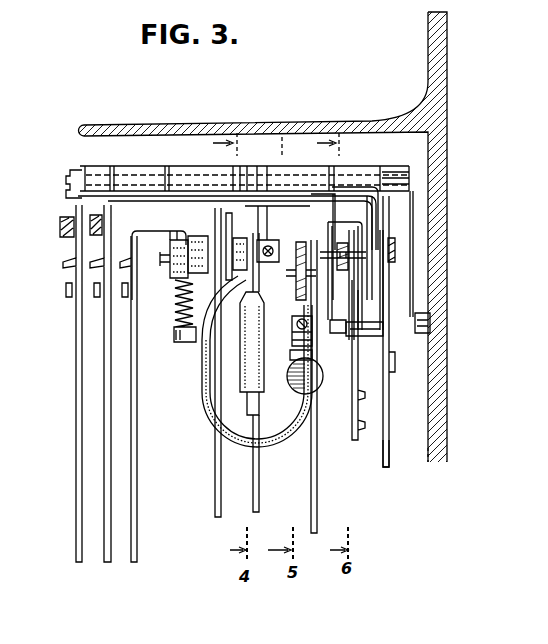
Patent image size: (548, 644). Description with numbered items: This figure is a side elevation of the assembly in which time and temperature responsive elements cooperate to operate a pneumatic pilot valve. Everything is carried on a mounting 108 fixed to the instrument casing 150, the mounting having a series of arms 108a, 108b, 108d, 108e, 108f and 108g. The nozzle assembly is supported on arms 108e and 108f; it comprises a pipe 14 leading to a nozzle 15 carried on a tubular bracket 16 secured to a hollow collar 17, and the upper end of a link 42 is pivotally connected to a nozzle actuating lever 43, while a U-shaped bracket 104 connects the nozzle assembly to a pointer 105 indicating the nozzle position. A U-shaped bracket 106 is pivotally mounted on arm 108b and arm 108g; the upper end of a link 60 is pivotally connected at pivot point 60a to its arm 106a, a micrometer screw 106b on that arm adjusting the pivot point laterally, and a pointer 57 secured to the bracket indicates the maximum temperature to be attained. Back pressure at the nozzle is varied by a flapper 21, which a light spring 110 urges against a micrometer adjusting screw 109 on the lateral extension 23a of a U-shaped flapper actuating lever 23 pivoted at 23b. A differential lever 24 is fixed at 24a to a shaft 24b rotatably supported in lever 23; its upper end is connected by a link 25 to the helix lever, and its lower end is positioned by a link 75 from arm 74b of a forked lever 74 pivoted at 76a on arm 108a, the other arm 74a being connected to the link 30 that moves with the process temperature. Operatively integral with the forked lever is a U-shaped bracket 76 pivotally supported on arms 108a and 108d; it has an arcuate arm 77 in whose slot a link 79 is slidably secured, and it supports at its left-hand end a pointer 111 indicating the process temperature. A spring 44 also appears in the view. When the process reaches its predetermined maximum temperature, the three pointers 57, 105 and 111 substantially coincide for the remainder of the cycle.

The mounting 108 is at (292, 164).
The arm of mounting 108a is at (372, 176).
The arm of mounting 108b is at (258, 174).
The arm of mounting 108d is at (82, 178).
The arm of mounting 108e is at (168, 178).
The arm of mounting 108f is at (234, 176).
The arm of mounting 108g is at (120, 163).
The instrument casing 150 is at (445, 397).
The U-shaped bracket 106 is at (158, 201).
The arm of U-shaped bracket 106a is at (266, 264).
The micrometer screw 106b is at (265, 242).
The U-shaped bracket 104 is at (159, 265).
The hollow collar 17 is at (193, 257).
The nozzle actuating lever 43 is at (205, 246).
The pipe 14 is at (228, 218).
The link 42 is at (216, 500).
The spring 44 is at (183, 305).
The pivot point 60a is at (245, 254).
The link 60 is at (255, 478).
The flapper 21 is at (290, 300).
The tubular bracket 16 is at (277, 442).
The nozzle 15 is at (296, 390).
The micrometer adjusting screw 109 is at (292, 332).
The lateral extension 23a is at (292, 356).
The link 79 is at (318, 502).
The arcuate arm 77 is at (312, 208).
The light spring 110 is at (302, 250).
The flapper actuating lever 23 is at (333, 232).
The pivot 23b is at (343, 247).
The link 25 is at (343, 262).
The differential lever 24 is at (352, 296).
The fixing point 24a is at (343, 319).
The shaft 24b is at (336, 338).
The U-shaped bracket 76 is at (346, 193).
The pivot 76a is at (391, 250).
The forked lever 74 is at (387, 298).
The arm of forked lever 74a is at (391, 352).
The arm of forked lever 74b is at (358, 380).
The link 75 is at (352, 410).
The link 30 is at (389, 446).
The pointer 111 is at (77, 490).
The pointer 57 is at (108, 437).
The pointer 105 is at (136, 488).